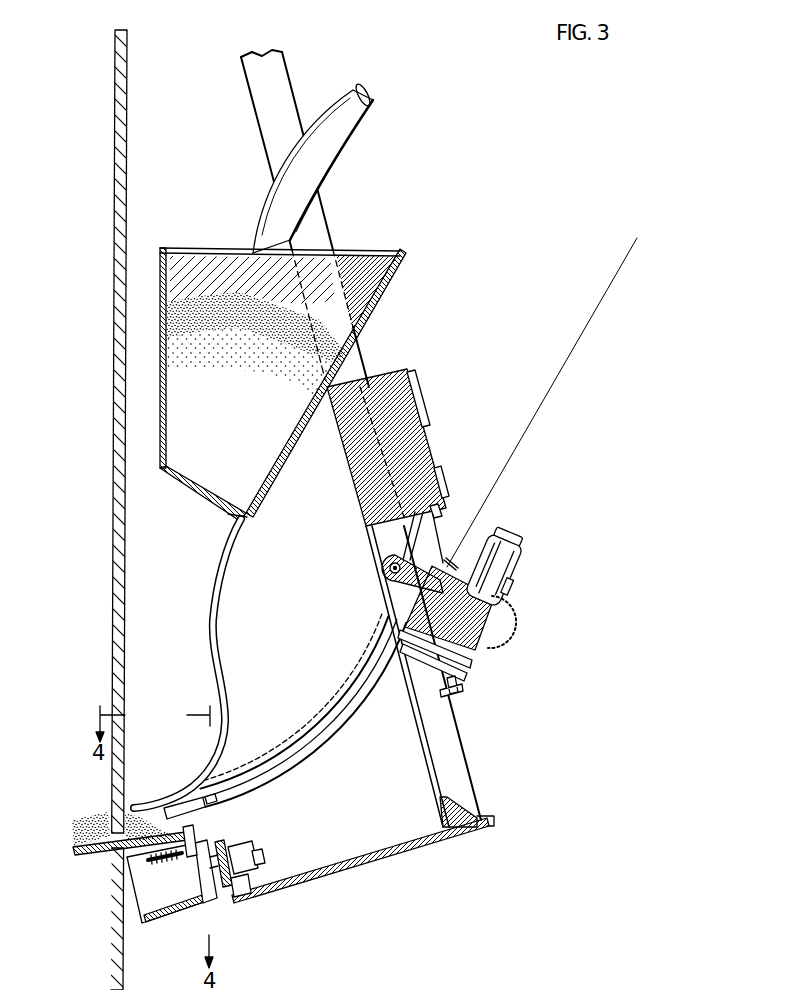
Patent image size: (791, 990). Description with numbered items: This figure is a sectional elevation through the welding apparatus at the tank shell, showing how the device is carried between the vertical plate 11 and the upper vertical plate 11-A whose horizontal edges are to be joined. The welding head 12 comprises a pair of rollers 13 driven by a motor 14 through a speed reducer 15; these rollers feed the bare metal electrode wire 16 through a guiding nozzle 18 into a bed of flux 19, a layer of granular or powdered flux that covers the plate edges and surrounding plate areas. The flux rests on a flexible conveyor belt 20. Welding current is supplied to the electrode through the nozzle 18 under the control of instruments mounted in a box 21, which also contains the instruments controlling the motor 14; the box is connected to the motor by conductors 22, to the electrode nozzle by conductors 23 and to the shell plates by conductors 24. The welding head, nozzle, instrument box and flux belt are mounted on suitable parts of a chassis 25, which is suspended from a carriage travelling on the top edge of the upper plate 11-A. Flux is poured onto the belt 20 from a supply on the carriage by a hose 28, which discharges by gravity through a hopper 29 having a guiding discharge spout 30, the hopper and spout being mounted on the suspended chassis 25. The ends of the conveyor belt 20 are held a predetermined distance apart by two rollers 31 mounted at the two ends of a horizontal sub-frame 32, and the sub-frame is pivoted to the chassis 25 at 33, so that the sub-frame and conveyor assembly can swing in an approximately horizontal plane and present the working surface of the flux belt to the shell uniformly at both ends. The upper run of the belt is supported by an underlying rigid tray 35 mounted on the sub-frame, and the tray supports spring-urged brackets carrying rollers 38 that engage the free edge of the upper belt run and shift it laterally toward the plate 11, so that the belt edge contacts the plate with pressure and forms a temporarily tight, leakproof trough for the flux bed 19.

The vertical plate 11 is at (112, 956).
The vertical plate 11-A is at (116, 548).
The welding head 12 is at (485, 467).
The rollers 13 is at (432, 597).
The motor 14 is at (508, 538).
The speed reducer 15 is at (478, 648).
The electrode wire 16 is at (569, 358).
The guiding nozzle 18 is at (368, 712).
The bed of flux 19 is at (130, 815).
The conveyor belt 20 is at (172, 873).
The box 21 is at (412, 378).
The conductors 22 is at (516, 622).
The conductors 23 is at (364, 662).
The conductors 24 is at (440, 514).
The chassis 25 is at (473, 795).
The hose 28 is at (355, 130).
The hopper 29 is at (222, 250).
The discharge spout 30 is at (214, 547).
The rollers 31 is at (190, 905).
The sub-frame 32 is at (247, 849).
The pivot 33 is at (246, 896).
The tray 35 is at (150, 856).
The rollers 38 is at (232, 830).